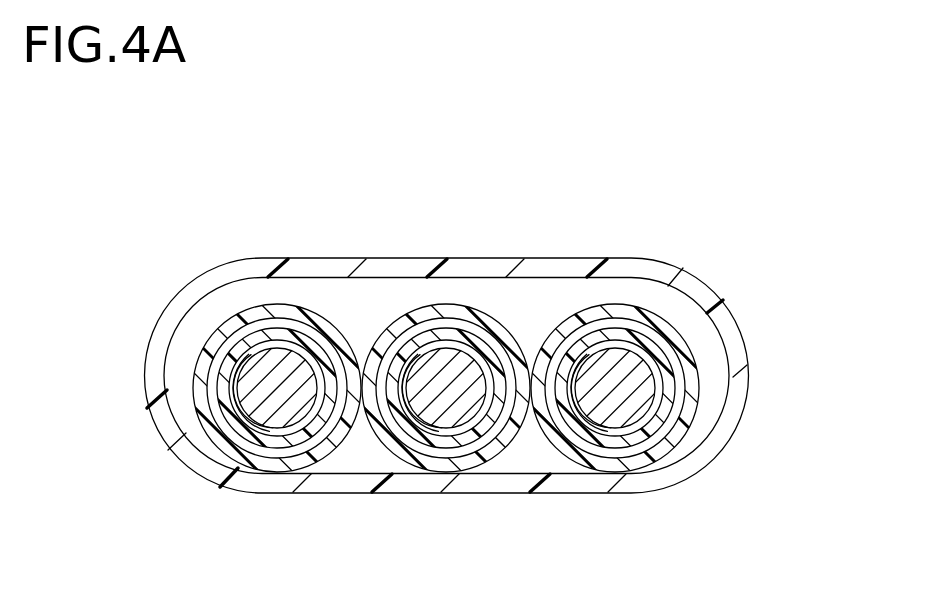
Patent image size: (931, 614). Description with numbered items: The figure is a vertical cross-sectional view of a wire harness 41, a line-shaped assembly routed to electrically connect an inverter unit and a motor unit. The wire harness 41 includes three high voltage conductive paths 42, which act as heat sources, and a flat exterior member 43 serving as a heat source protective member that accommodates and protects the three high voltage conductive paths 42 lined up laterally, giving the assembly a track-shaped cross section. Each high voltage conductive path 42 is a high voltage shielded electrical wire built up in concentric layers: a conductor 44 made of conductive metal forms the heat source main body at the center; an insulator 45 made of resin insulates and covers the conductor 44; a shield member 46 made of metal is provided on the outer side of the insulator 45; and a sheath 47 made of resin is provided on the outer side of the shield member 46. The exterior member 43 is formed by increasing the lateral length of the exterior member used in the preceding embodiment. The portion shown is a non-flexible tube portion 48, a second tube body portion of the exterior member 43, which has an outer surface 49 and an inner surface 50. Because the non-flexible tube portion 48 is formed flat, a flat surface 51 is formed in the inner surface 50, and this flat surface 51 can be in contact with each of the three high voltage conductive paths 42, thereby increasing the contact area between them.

The wire harness 41 is at (671, 224).
The high voltage conductive path 42 is at (446, 341).
The exterior member 43 is at (581, 254).
The conductor 44 is at (263, 376).
The insulator 45 is at (278, 342).
The shield member 46 is at (306, 337).
The sheath 47 is at (336, 338).
The non-flexible tube portion 48 is at (597, 483).
The outer surface 49 is at (713, 459).
The inner surface 50 is at (710, 413).
The flat surface 51 is at (513, 462).